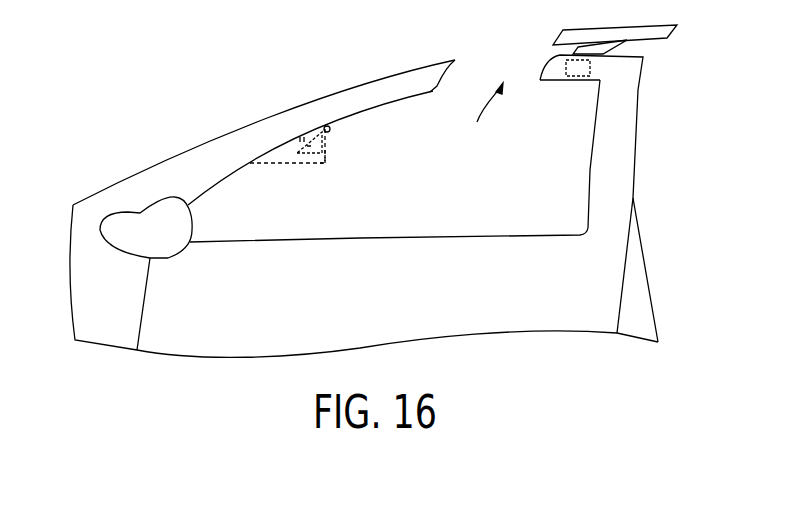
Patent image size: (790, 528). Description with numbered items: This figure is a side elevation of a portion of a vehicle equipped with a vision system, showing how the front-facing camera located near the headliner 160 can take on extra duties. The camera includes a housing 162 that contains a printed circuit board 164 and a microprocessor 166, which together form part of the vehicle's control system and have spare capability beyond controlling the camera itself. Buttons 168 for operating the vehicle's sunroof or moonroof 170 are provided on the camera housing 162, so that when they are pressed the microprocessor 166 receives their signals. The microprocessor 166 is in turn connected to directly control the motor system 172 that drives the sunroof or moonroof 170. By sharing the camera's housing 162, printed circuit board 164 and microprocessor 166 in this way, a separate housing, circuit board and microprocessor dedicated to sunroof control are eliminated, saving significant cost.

The headliner 160 is at (420, 93).
The housing 162 is at (293, 166).
The printed circuit board 164 is at (313, 123).
The microprocessor 166 is at (328, 157).
The buttons 168 is at (328, 128).
The sunroof or moonroof 170 is at (483, 120).
The motor system 172 is at (583, 84).